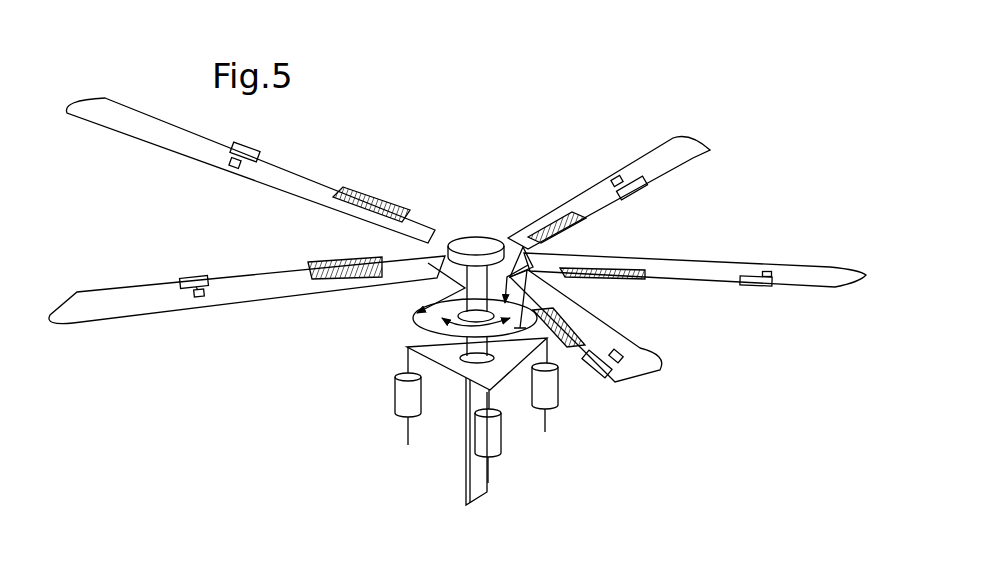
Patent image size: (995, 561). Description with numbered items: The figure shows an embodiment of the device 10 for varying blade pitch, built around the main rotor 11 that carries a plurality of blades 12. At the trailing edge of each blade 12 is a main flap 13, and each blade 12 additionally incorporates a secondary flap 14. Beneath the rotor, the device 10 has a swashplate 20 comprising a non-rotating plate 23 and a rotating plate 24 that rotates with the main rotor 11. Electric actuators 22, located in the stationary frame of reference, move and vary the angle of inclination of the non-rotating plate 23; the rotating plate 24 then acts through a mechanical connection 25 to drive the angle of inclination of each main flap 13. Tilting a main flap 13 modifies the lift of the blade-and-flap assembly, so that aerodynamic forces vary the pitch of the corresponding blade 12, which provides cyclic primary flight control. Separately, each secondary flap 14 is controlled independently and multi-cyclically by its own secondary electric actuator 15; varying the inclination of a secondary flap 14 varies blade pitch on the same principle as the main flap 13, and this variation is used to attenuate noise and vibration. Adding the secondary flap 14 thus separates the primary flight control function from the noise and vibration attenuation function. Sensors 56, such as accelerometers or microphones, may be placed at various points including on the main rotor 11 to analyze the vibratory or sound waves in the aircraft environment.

The device for varying blade pitch 10 is at (150, 410).
The main rotor 11 is at (452, 152).
The blade 12 is at (653, 150).
The main flap 13 is at (550, 221).
The secondary flap 14 is at (645, 195).
The secondary electric actuator 15 is at (630, 351).
The swashplate 20 is at (380, 349).
The electric actuator 22 is at (392, 404).
The non-rotating plate 23 is at (516, 377).
The rotating plate 24 is at (408, 347).
The mechanical connection 25 is at (428, 315).
The sensor 56 is at (474, 241).